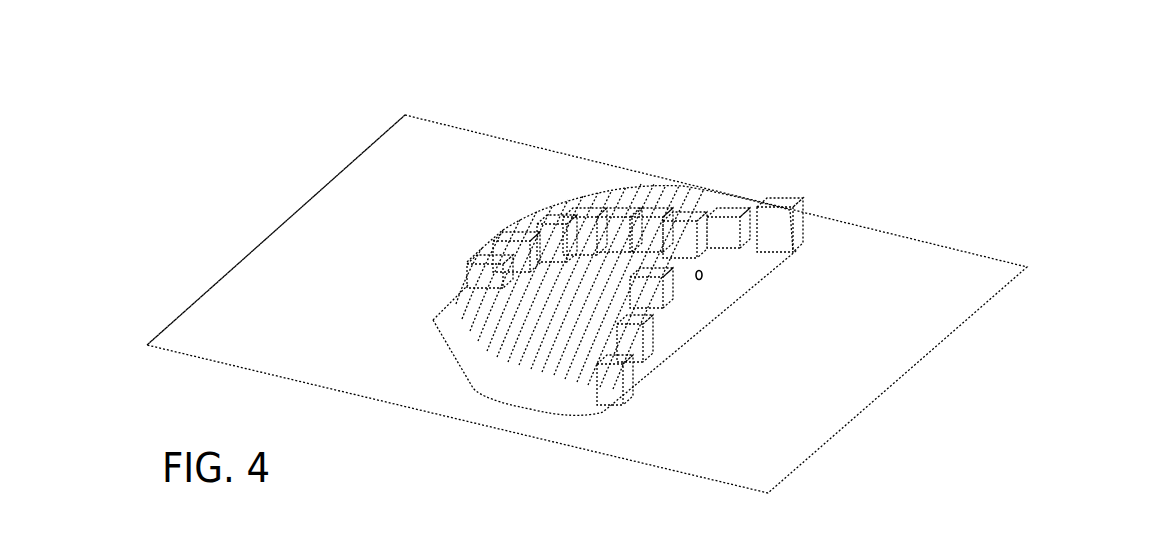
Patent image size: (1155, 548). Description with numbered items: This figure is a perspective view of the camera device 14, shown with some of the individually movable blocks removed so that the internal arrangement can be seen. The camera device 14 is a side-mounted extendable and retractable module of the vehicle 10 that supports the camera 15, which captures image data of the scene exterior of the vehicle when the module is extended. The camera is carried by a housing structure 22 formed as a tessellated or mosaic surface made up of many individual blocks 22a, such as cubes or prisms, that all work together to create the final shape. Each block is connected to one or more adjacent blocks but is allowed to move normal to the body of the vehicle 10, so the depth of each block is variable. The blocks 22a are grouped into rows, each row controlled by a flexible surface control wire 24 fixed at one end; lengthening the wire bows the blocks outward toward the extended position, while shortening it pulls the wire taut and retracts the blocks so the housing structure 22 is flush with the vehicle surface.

The vehicle 10 is at (318, 237).
The camera device 14 is at (568, 167).
The camera 15 is at (710, 268).
The housing structure 22 is at (470, 235).
The blocks 22a is at (483, 268).
The control wire 24 is at (535, 358).